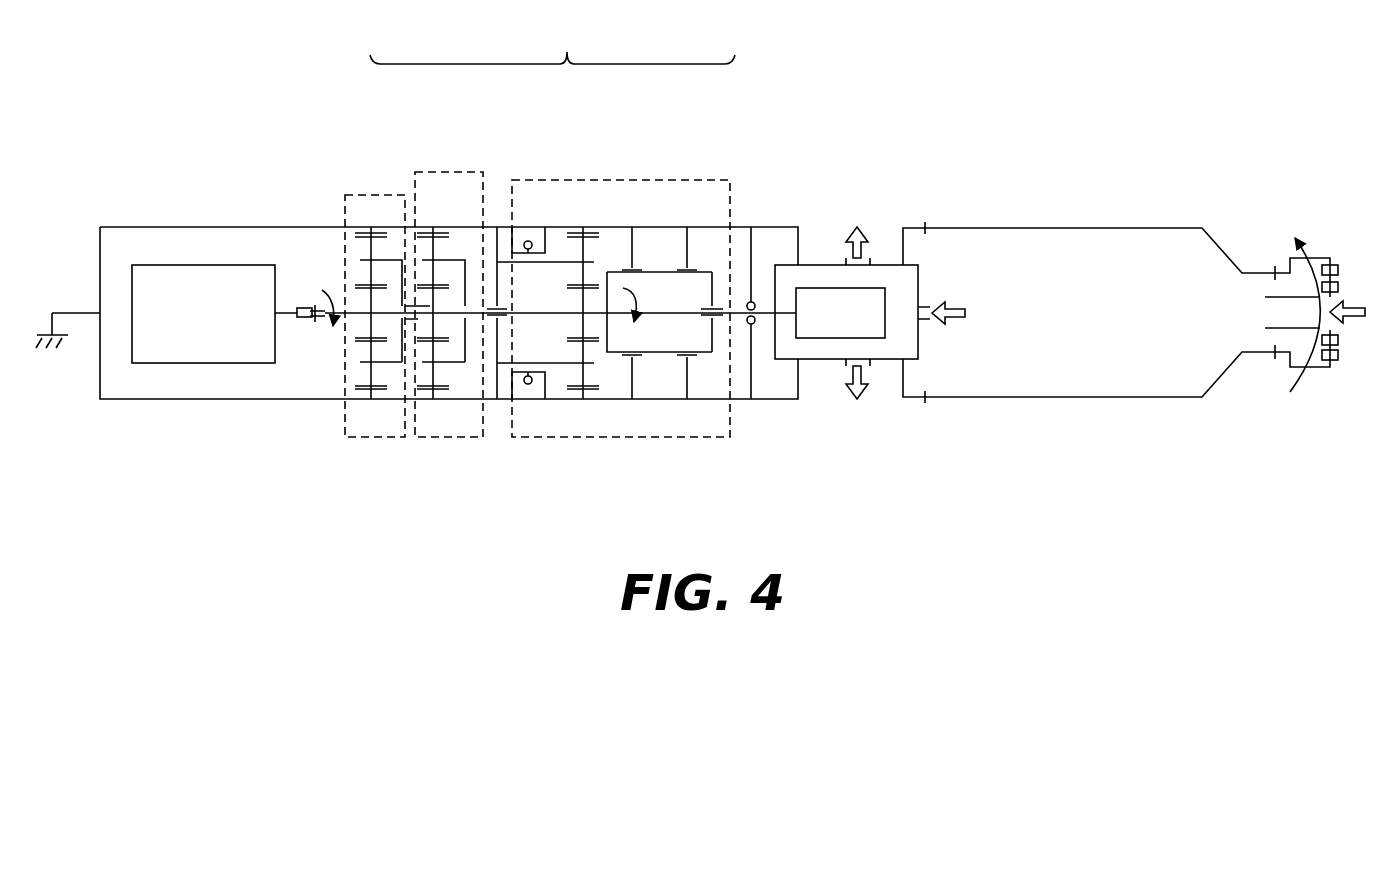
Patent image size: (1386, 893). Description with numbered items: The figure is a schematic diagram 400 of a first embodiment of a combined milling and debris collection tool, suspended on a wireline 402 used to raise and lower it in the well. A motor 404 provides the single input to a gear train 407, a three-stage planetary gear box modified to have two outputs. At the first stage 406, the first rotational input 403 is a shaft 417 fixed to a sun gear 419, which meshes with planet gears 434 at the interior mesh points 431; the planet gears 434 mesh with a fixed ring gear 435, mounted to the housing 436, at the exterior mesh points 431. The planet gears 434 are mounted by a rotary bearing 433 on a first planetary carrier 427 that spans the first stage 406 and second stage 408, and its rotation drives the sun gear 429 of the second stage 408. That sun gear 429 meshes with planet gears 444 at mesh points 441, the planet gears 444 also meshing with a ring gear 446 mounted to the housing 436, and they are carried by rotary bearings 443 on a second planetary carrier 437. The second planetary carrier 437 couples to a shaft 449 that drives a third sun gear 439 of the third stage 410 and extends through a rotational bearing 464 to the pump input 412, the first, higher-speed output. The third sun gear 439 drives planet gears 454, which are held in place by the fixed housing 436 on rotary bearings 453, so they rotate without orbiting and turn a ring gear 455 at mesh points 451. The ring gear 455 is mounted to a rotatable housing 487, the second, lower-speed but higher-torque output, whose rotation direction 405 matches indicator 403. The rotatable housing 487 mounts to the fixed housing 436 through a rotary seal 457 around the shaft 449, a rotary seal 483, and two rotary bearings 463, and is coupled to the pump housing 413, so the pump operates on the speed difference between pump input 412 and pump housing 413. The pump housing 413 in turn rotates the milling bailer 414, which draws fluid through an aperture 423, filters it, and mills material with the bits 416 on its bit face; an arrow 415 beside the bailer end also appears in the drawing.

The diagram 400 is at (182, 56).
The wireline 402 is at (80, 313).
The rotation direction indicator 403 is at (318, 282).
The motor 404 is at (203, 265).
The rotation direction indicator 405 is at (639, 328).
The first stage 406 is at (363, 195).
The gear train 407 is at (567, 52).
The second stage 408 is at (483, 172).
The third stage 410 is at (607, 180).
The pump input 412 is at (820, 288).
The pump housing 413 is at (890, 265).
The milling bailer 414 is at (1015, 228).
The rotation direction 415 is at (1302, 250).
The bit face 416 is at (1344, 360).
The shaft 417 is at (312, 326).
The sun gear 419 is at (365, 320).
The aperture 423 is at (1285, 320).
The first planetary carrier 427 is at (390, 368).
The sun gear 429 is at (427, 368).
The mesh points 431 is at (362, 228).
The rotary bearing 433 is at (367, 368).
The planet gears 434 is at (372, 228).
The ring gear 435 is at (365, 402).
The housing 436 is at (190, 400).
The second planetary carrier 437 is at (462, 368).
The third sun gear 439 is at (597, 262).
The mesh points 441 is at (433, 228).
The rotary bearings 443 is at (428, 318).
The planet gears 444 is at (434, 281).
The ring gear 446 is at (433, 402).
The shaft 449 is at (618, 318).
The mesh points 451 is at (577, 230).
The rotary bearings 453 is at (588, 268).
The planet gears 454 is at (590, 300).
The ring gear 455 is at (580, 405).
The rotary seal 457 is at (754, 328).
The rotary bearings 463 is at (631, 400).
The rotational bearing 464 is at (714, 305).
The rotary seal 483 is at (527, 386).
The rotatable housing 487 is at (672, 400).